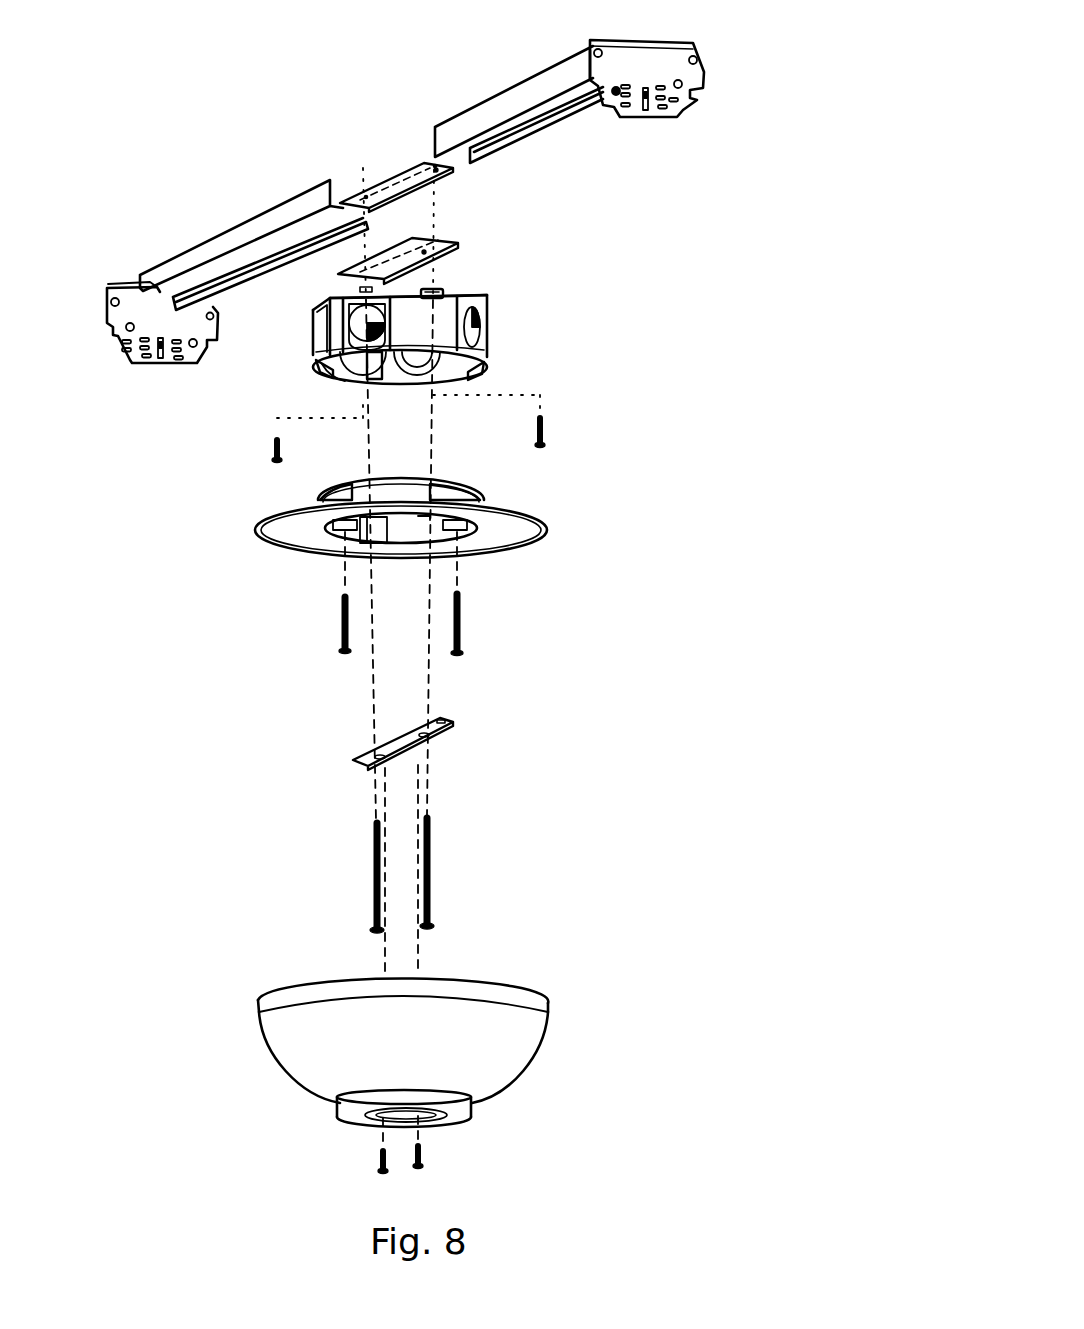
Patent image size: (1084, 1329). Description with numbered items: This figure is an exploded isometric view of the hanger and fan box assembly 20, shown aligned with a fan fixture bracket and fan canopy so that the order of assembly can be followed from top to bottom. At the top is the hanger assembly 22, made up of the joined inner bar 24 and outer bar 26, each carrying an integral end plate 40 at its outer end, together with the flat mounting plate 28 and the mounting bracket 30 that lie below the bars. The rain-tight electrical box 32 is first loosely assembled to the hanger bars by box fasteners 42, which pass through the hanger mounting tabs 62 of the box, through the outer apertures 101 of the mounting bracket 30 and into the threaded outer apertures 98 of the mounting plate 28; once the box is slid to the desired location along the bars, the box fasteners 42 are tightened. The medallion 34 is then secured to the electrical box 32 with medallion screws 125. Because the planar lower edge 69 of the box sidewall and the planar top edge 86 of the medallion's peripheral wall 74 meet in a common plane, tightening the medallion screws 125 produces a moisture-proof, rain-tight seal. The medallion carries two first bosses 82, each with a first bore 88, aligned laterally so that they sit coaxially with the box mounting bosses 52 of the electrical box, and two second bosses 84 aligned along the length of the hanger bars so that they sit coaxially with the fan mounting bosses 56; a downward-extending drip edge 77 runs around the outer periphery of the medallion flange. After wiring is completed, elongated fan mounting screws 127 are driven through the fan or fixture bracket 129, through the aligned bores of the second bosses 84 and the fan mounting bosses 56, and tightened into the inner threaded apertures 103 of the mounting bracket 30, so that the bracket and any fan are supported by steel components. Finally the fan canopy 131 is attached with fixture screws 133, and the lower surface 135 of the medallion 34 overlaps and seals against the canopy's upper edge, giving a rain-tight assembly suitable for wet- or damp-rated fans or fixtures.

The hanger and fan box assembly 20 is at (118, 185).
The hanger assembly 22 is at (563, 122).
The inner bar 24 is at (510, 88).
The outer bar 26 is at (212, 238).
The mounting plate 28 is at (393, 175).
The mounting bracket 30 is at (455, 240).
The electrical box 32 is at (484, 320).
The medallion 34 is at (547, 528).
The end plate 40 is at (648, 58).
The box fasteners 42 is at (547, 428).
The box mounting bosses 52 is at (323, 366).
The fan mounting bosses 56 is at (377, 364).
The hanger mounting tabs 62 is at (447, 291).
The planar lower edge 69 is at (337, 377).
The peripheral wall 74 is at (477, 490).
The drip edge 77 is at (302, 557).
The first bosses 82 is at (463, 535).
The second bosses 84 is at (377, 523).
The planar top edge 86 is at (347, 492).
The first bore 88 is at (345, 527).
The outer apertures 98 is at (441, 172).
The outer apertures 101 is at (360, 288).
The inner threaded apertures 103 is at (420, 254).
The medallion screws 125 is at (463, 622).
The elongated fan mounting screws 127 is at (430, 870).
The fan or fixture bracket 129 is at (450, 733).
The fan canopy 131 is at (550, 1007).
The fixture screws 133 is at (423, 1157).
The lower surface 135 is at (293, 530).